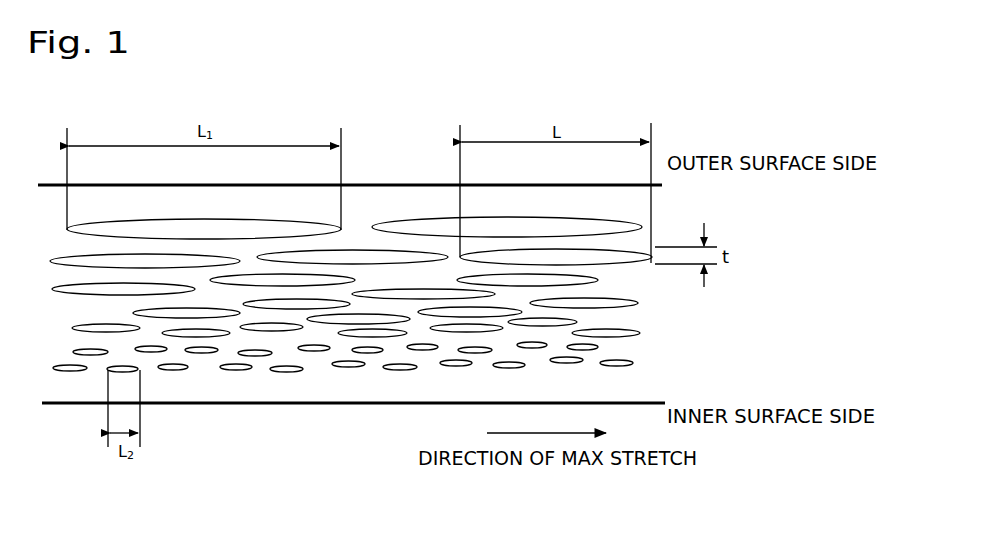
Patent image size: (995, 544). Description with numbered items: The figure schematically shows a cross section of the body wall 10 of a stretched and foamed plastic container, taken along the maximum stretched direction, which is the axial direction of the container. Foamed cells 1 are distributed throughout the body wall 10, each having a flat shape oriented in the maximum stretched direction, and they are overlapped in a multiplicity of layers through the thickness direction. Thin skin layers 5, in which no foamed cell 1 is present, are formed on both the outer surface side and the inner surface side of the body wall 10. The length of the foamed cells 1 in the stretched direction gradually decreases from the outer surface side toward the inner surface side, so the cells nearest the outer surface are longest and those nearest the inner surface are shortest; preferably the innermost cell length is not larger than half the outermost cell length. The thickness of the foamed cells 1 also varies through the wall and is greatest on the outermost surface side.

The foamed cells 1 is at (355, 249).
The skin layers 5 is at (622, 200).
The body wall 10 is at (449, 314).